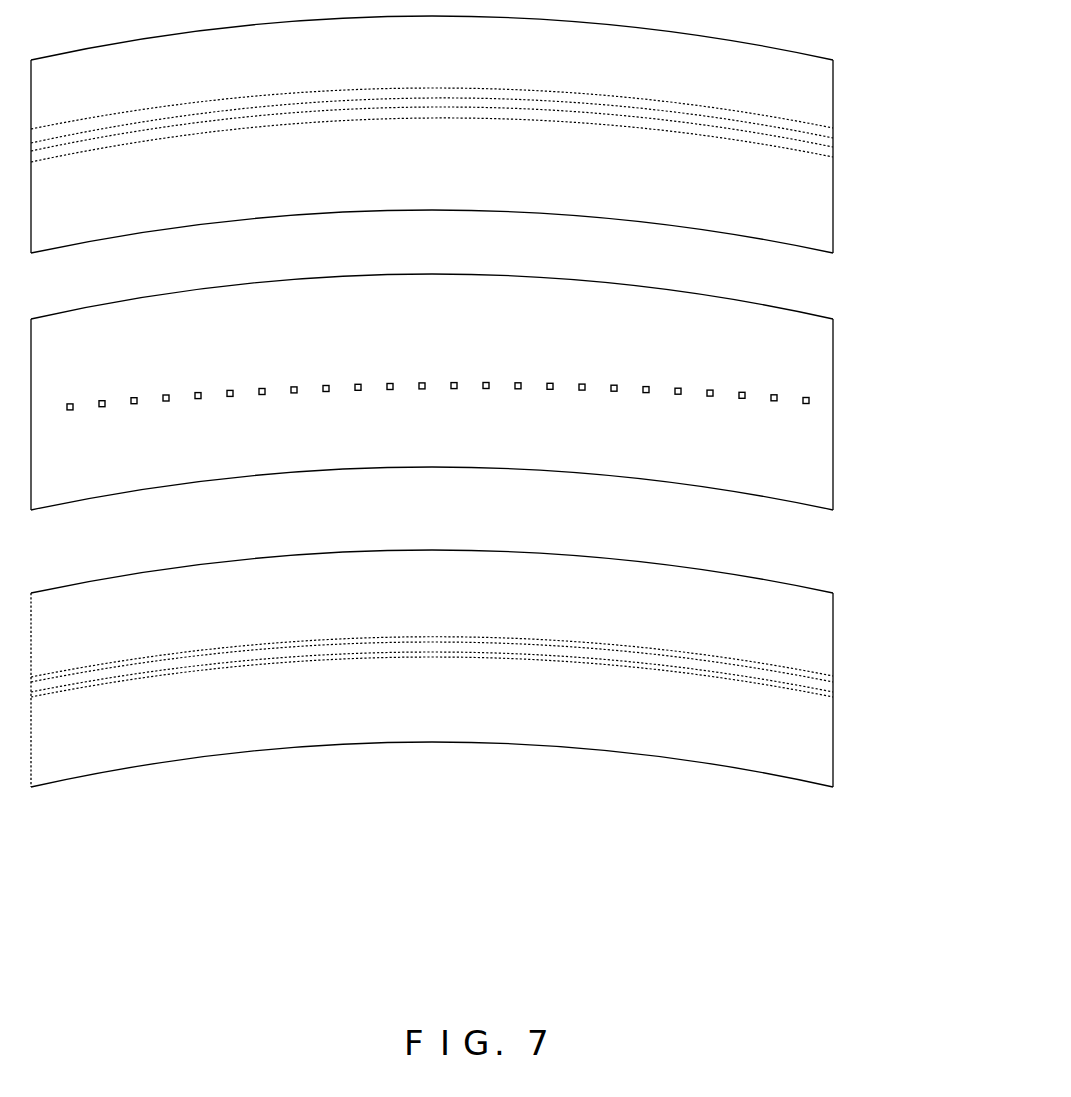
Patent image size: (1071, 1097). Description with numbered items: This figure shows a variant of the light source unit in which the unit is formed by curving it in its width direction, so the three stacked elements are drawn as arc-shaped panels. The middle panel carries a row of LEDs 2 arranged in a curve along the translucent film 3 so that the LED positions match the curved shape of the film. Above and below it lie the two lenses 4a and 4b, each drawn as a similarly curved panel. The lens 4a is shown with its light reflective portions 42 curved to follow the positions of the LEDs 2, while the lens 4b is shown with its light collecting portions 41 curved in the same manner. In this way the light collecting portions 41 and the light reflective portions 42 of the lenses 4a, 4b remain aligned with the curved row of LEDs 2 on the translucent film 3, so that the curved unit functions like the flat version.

The LED 2 is at (831, 357).
The translucent film 3 is at (811, 407).
The lens 4a is at (831, 97).
The lens 4b is at (831, 630).
The light collecting portion 41 is at (833, 687).
The light reflective portion 42 is at (833, 153).